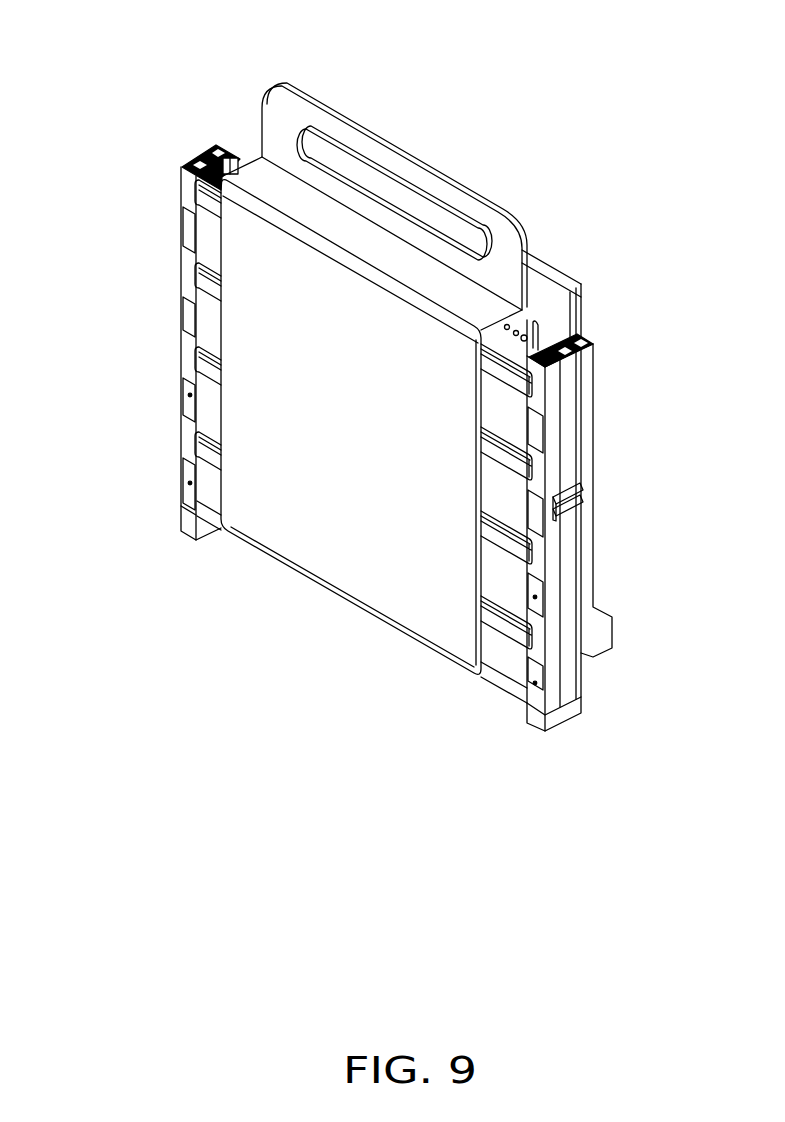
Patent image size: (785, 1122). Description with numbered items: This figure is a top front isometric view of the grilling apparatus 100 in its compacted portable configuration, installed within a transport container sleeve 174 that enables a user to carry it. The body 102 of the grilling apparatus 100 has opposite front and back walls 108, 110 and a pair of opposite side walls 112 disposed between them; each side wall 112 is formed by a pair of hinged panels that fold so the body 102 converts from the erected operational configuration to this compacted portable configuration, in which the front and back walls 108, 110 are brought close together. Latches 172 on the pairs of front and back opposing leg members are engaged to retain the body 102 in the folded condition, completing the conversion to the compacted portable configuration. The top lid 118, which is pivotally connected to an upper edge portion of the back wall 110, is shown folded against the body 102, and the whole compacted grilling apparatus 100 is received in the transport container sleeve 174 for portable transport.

The grilling apparatus 100 is at (146, 82).
The back wall 110 is at (240, 156).
The front wall 108 is at (502, 579).
The body 102 is at (569, 333).
The side walls 112 is at (535, 328).
The transport container sleeve 174 is at (559, 258).
The latches 172 is at (581, 499).
The top lid 118 is at (598, 554).